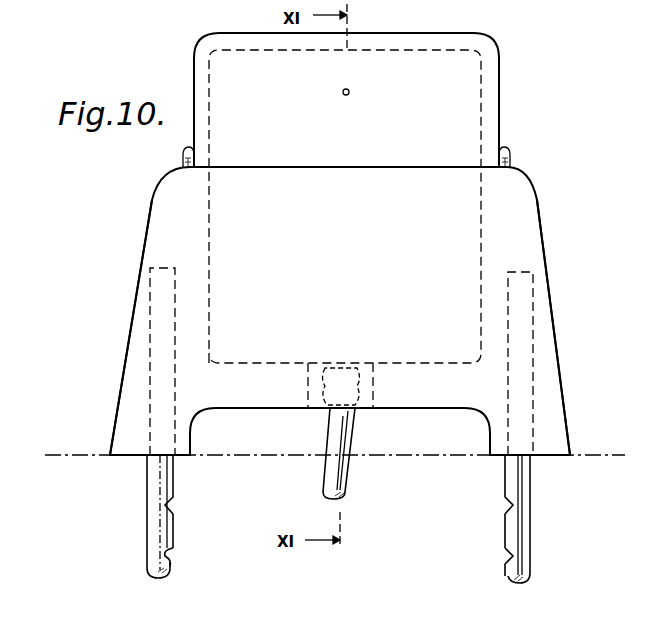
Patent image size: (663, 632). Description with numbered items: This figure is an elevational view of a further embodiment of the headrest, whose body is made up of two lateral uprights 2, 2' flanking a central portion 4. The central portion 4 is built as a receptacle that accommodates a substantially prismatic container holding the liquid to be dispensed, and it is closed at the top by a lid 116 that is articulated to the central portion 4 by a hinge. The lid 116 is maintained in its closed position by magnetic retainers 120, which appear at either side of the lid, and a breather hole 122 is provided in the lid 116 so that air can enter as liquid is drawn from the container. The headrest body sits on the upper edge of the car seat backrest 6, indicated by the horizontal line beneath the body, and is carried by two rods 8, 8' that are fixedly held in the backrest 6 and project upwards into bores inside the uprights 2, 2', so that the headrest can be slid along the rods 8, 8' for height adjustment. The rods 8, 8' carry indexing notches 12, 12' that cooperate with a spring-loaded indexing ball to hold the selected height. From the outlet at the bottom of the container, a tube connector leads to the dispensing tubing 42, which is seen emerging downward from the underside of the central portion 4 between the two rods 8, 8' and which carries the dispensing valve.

The lid 116 is at (492, 70).
The magnetic retainers 120 is at (508, 158).
The breather hole 122 is at (349, 93).
The central portion 4 is at (470, 240).
The lateral upright 2 is at (120, 327).
The lateral upright 2' is at (568, 327).
The car seat backrest 6 is at (605, 455).
The rod 8 is at (136, 516).
The rod 8' is at (537, 519).
The indexing notch 12 is at (195, 566).
The indexing notch 12' is at (469, 566).
The dispensing tubing 42 is at (345, 489).